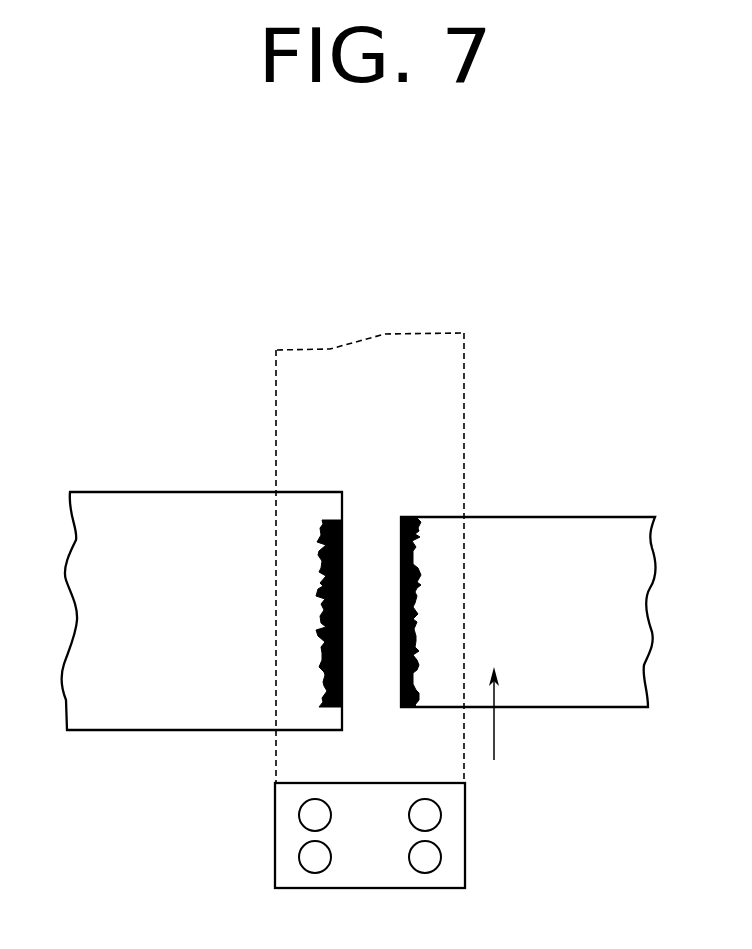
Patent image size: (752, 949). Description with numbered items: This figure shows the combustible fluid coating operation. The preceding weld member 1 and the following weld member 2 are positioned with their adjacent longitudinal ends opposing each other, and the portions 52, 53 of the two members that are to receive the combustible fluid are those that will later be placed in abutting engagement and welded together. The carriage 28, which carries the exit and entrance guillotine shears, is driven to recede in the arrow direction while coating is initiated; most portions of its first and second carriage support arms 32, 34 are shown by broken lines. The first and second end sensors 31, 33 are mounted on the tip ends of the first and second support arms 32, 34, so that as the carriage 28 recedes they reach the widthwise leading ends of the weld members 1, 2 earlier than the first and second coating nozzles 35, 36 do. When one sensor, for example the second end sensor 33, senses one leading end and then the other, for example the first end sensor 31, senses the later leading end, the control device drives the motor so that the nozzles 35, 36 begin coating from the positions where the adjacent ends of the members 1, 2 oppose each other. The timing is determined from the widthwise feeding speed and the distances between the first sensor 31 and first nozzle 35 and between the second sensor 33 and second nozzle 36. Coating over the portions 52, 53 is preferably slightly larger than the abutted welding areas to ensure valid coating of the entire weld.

The preceding weld member 1 is at (528, 572).
The following weld member 2 is at (202, 557).
The carriage 28 is at (371, 360).
The first end sensor 31 is at (441, 812).
The first carriage support arm 32 is at (448, 437).
The second end sensor 33 is at (300, 812).
The second carriage support arm 34 is at (300, 455).
The first coating nozzle 35 is at (441, 858).
The second coating nozzle 36 is at (300, 857).
The portion to be coated of preceding weld member 52 is at (478, 612).
The portion to be coated of following weld member 53 is at (271, 613).